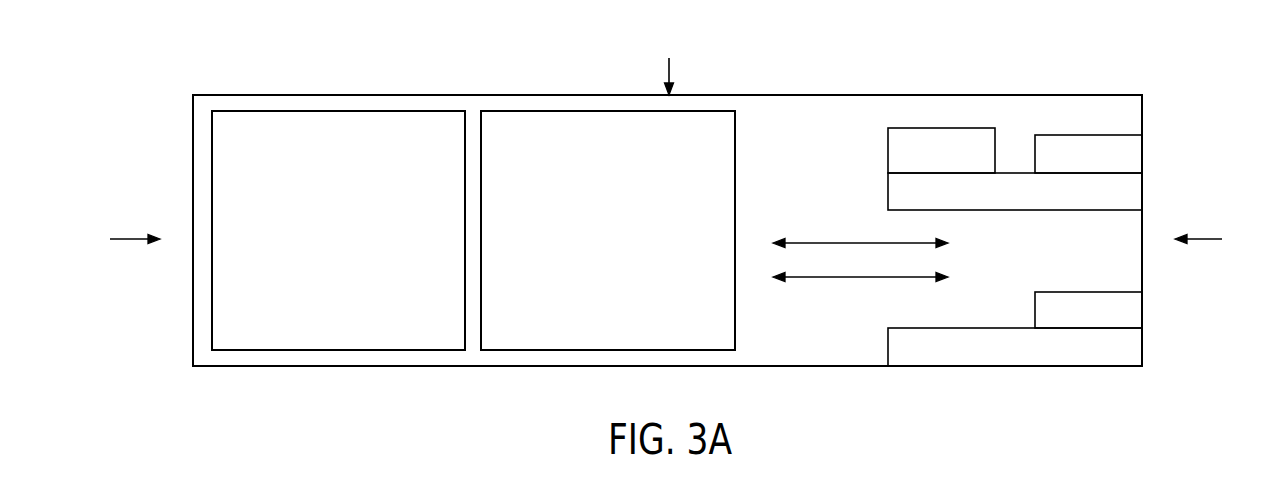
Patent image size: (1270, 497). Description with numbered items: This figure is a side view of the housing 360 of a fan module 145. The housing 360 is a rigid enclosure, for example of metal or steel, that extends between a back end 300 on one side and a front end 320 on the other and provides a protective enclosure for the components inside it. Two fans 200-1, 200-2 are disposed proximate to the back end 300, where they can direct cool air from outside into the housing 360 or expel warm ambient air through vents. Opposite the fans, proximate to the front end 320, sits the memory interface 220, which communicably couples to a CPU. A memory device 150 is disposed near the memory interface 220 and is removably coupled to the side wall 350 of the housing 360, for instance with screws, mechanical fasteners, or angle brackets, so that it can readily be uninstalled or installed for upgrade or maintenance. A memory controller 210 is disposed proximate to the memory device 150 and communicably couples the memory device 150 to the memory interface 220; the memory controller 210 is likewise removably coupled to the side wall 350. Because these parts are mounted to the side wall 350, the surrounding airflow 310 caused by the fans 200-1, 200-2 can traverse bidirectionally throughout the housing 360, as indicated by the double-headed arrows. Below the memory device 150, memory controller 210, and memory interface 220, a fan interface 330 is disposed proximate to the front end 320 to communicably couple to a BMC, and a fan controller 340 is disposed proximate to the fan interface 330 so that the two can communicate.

The fan module 145 is at (213, 54).
The fan 200-1 is at (315, 254).
The fan 200-2 is at (584, 256).
The memory device 150 is at (927, 162).
The memory interface 220 is at (1074, 164).
The memory controller 210 is at (999, 201).
The fan interface 330 is at (1074, 322).
The fan controller 340 is at (999, 358).
The side wall 350 is at (799, 162).
The airflow 310 is at (850, 242).
The back end 300 is at (118, 240).
The front end 320 is at (1218, 240).
The housing 360 is at (669, 65).